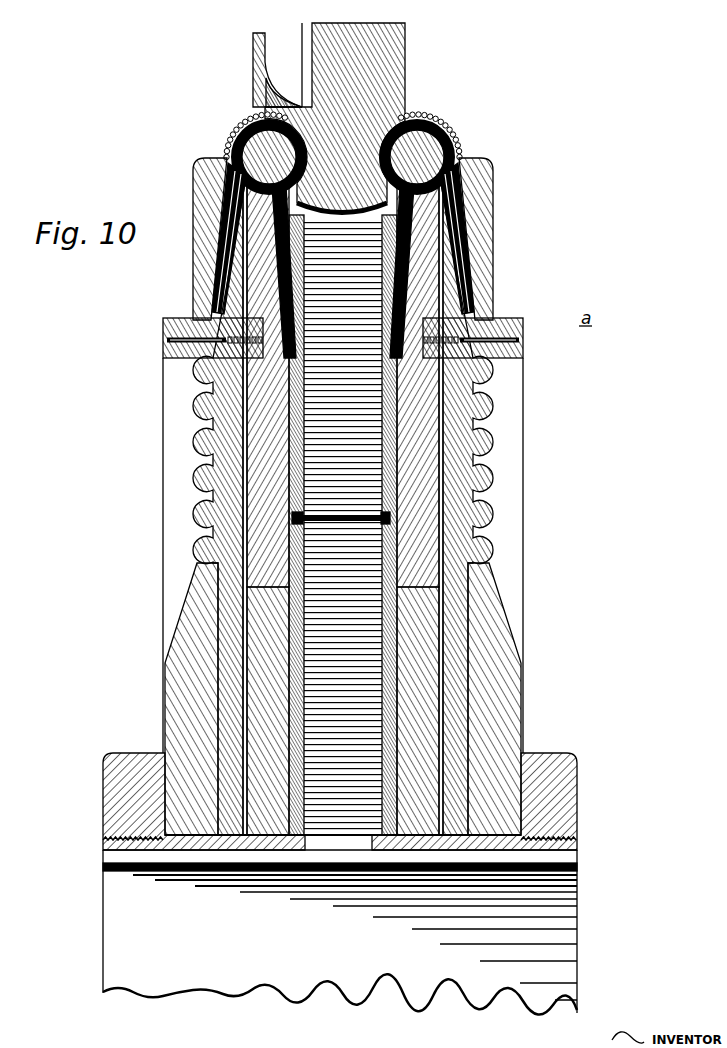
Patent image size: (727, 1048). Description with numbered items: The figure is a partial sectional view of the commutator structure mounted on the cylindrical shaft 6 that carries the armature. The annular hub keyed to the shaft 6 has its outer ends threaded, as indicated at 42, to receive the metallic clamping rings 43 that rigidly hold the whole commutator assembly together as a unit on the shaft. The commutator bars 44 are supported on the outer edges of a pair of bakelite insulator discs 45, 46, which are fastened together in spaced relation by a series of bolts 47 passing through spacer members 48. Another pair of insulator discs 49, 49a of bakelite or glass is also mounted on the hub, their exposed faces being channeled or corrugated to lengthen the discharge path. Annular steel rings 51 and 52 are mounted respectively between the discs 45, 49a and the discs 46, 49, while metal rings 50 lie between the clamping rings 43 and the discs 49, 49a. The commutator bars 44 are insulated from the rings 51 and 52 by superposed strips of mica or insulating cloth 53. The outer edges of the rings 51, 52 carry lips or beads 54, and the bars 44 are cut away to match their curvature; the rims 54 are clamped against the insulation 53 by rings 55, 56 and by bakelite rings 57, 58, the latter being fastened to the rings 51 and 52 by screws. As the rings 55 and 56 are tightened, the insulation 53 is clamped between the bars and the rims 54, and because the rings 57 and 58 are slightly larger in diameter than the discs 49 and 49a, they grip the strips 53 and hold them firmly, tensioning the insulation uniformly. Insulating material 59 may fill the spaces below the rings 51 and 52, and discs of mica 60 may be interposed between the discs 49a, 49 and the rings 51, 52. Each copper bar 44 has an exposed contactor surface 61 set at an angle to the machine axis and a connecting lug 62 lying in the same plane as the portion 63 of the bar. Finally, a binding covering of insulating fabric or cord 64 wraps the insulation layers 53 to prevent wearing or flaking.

The cylindrical shaft 6 is at (575, 915).
The threaded outer ends of hub 42 is at (560, 836).
The metallic clamping ring 43 is at (559, 762).
The commutator bar 44 is at (397, 37).
The insulator disc 45 is at (405, 251).
The insulator disc 46 is at (288, 256).
The bolt 47 is at (343, 511).
The spacer member 48 is at (365, 540).
The insulator disc 49 is at (198, 437).
The insulator disc 49a is at (490, 440).
The metal ring 50 is at (500, 718).
The annular metallic ring 51 is at (447, 385).
The annular metallic ring 52 is at (262, 405).
The insulation 53 is at (462, 155).
The bead 54 is at (418, 117).
The ring 55 is at (505, 322).
The ring 56 is at (170, 322).
The ring of insulation 57 is at (493, 187).
The ring of insulation 58 is at (200, 181).
The insulating material 59 is at (430, 678).
The disc of mica 60 is at (437, 608).
The contactor surface 61 is at (325, 24).
The connecting lug 62 is at (253, 38).
The portion of commutator bar 63 is at (336, 147).
The binding covering 64 is at (442, 113).